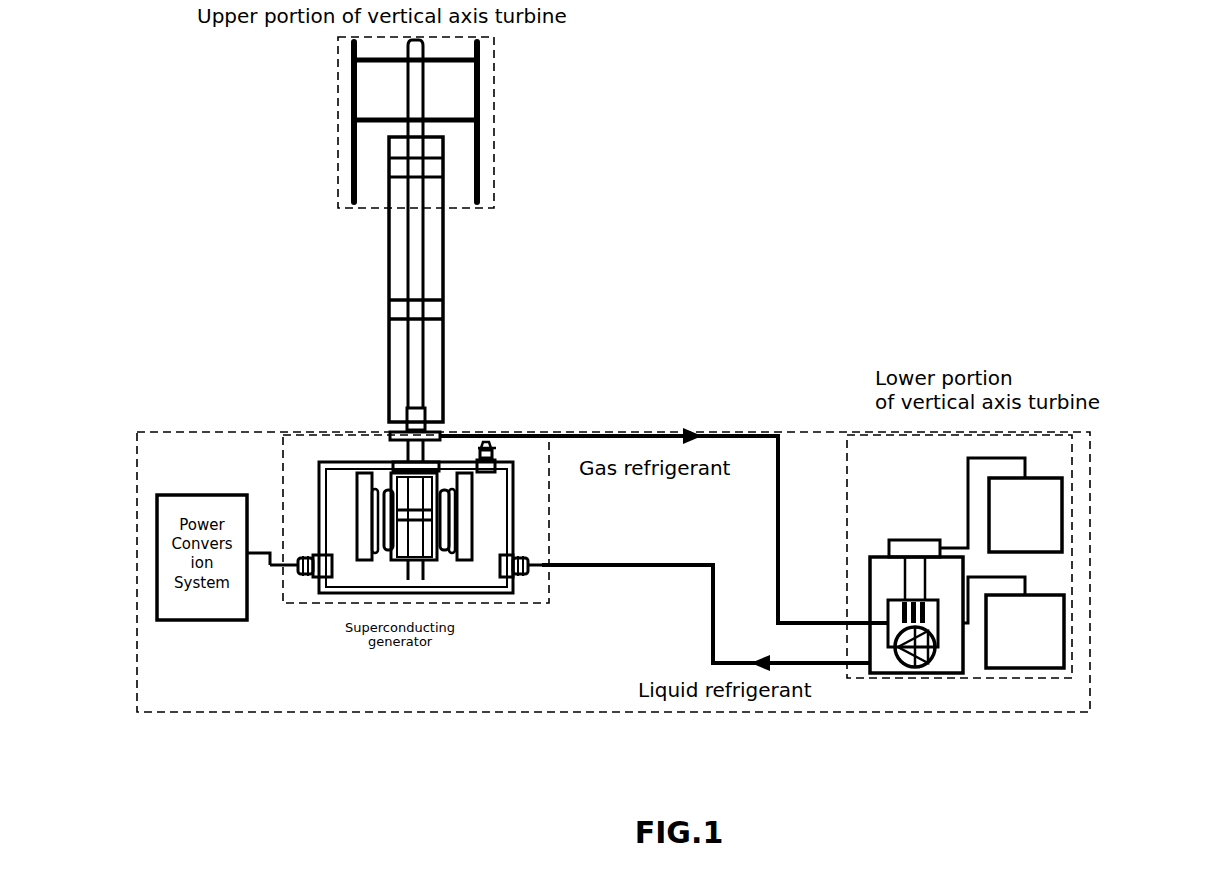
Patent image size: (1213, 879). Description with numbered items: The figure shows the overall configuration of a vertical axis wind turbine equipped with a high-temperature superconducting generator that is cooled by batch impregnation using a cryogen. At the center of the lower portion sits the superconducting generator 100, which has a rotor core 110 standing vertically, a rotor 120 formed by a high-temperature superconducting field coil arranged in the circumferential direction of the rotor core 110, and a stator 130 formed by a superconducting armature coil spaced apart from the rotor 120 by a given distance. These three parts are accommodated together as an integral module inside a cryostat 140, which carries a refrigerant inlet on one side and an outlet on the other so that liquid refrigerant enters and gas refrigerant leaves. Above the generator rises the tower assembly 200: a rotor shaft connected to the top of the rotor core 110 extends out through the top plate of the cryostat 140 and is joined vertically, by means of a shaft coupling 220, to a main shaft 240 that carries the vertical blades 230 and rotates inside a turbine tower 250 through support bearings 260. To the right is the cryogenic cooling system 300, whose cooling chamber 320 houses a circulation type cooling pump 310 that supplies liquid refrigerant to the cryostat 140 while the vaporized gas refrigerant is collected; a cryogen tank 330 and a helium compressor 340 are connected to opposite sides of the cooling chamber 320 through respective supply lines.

The superconducting generator 100 is at (311, 499).
The rotor core 110 is at (381, 565).
The rotor 120 is at (449, 476).
The stator 130 is at (485, 496).
The cryostat 140 is at (493, 600).
The tower assembly 200 is at (340, 251).
The shaft coupling 220 is at (404, 412).
The vertical blades 230 is at (350, 155).
The main shaft 240 is at (407, 255).
The turbine tower 250 is at (388, 360).
The support bearings 260 is at (388, 310).
The cryogenic cooling system 300 is at (944, 580).
The circulation type cooling pump 310 is at (905, 660).
The cooling chamber 320 is at (941, 677).
The cryogen tank 330 is at (1066, 640).
The helium compressor 340 is at (1064, 516).